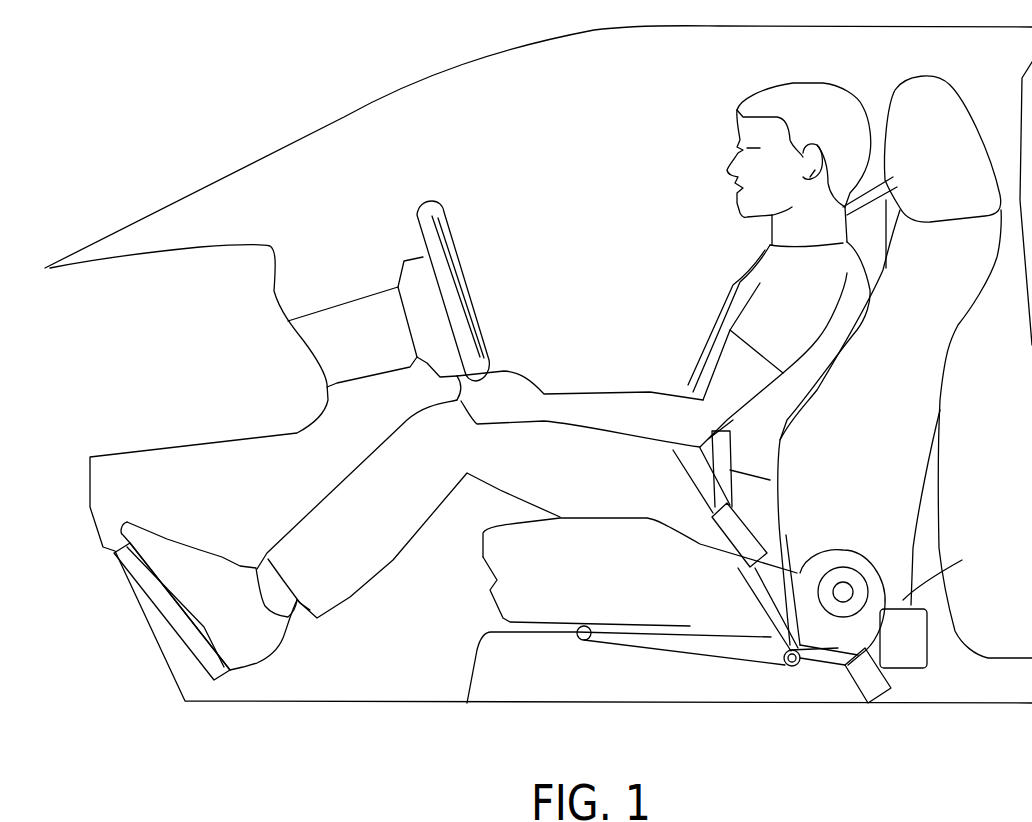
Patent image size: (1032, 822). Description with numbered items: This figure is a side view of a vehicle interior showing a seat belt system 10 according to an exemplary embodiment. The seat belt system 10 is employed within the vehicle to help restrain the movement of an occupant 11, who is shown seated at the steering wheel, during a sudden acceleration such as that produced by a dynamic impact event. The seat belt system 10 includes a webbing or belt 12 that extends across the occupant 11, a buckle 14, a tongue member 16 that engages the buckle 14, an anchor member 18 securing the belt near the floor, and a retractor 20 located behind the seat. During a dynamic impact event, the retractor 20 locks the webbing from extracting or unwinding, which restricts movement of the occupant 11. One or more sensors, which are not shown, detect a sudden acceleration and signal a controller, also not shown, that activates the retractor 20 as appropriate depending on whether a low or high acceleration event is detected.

The seat belt system 10 is at (160, 112).
The occupant 11 is at (641, 412).
The belt 12 is at (935, 588).
The buckle 14 is at (738, 558).
The tongue member 16 is at (705, 503).
The anchor member 18 is at (886, 705).
The retractor 20 is at (911, 648).